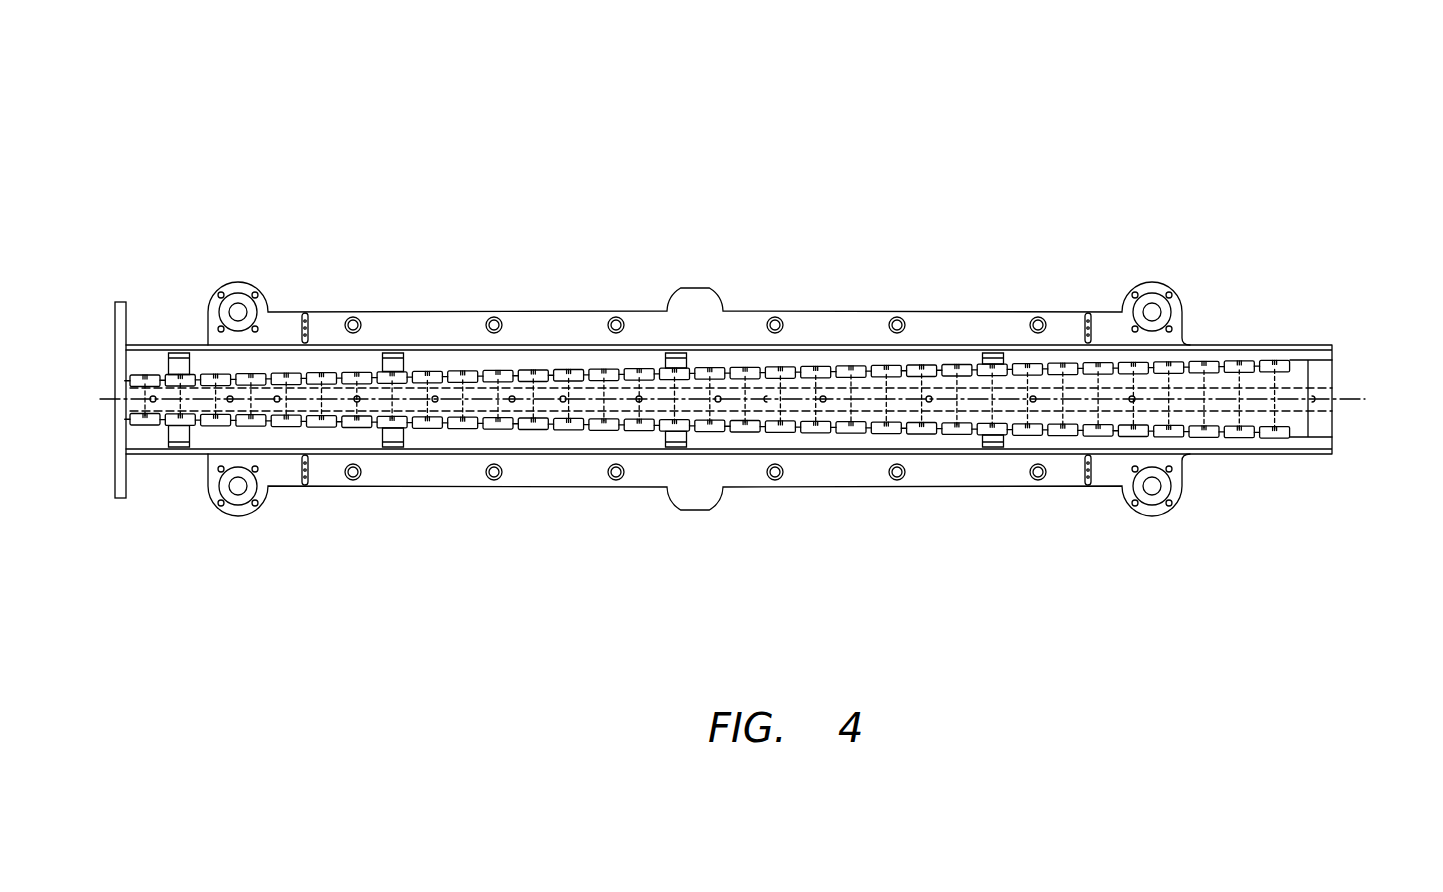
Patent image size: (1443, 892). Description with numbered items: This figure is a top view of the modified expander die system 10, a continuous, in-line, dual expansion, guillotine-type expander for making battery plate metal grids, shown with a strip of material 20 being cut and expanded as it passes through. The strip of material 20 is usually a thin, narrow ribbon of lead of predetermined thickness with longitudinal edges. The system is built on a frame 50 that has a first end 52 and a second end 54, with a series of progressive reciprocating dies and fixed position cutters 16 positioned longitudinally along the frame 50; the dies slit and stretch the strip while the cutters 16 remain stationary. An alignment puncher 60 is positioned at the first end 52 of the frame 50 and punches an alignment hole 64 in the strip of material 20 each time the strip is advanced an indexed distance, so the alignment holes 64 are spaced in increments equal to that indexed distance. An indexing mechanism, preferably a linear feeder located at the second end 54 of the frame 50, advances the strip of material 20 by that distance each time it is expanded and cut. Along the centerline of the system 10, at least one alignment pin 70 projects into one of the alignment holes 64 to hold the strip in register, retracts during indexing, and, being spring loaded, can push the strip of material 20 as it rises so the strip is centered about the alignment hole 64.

The modified expander die system 10 is at (822, 197).
The fixed position cutters 16 is at (279, 378).
The strip of material 20 is at (327, 384).
The frame 50 is at (637, 311).
The first end 52 is at (1333, 341).
The second end 54 is at (121, 302).
The alignment puncher 60 is at (1320, 418).
The alignment hole 64 is at (563, 396).
The alignment pin 70 is at (153, 396).